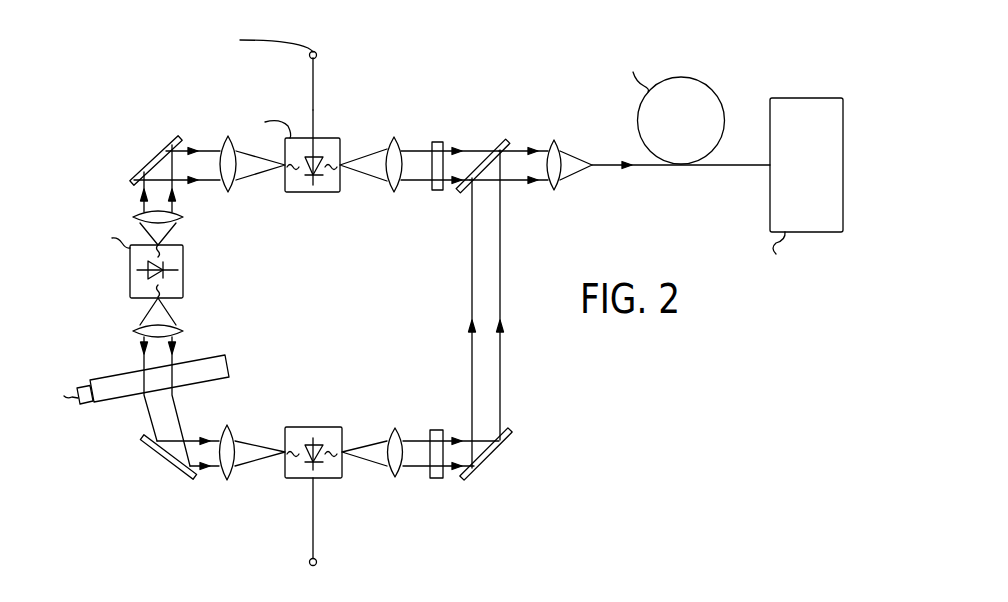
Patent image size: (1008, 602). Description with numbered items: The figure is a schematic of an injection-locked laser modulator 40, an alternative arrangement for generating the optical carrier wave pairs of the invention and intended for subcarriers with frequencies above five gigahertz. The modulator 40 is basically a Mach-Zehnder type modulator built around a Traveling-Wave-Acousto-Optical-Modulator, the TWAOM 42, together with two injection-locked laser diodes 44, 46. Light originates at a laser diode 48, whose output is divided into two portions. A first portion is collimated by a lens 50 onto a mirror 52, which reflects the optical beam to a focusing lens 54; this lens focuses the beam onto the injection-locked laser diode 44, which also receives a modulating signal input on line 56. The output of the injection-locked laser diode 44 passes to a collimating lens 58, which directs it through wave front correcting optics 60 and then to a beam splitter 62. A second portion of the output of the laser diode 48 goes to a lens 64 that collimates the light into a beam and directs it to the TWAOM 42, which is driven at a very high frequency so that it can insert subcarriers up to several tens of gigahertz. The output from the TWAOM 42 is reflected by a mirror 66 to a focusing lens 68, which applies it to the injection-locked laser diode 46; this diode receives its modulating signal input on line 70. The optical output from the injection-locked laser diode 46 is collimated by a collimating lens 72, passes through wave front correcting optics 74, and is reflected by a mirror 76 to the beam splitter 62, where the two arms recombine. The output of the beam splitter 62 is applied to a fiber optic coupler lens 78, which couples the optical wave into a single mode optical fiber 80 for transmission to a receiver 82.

The injection-locked laser modulator 40 is at (421, 102).
The Traveling-Wave-Acousto-Optical-Modulator (TWAOM) 42 is at (125, 396).
The injection-locked laser diode 44 is at (323, 138).
The injection-locked laser diode 46 is at (325, 478).
The laser diode 48 is at (130, 270).
The lens 50 is at (182, 216).
The mirror 52 is at (166, 147).
The focusing lens 54 is at (237, 147).
The line 56 is at (313, 106).
The collimating lens 58 is at (395, 183).
The wave front correcting optics 60 is at (437, 142).
The beam splitter 62 is at (503, 143).
The lens 64 is at (139, 323).
The mirror 66 is at (170, 461).
The focusing lens 68 is at (233, 434).
The line 70 is at (313, 513).
The collimating lens 72 is at (398, 431).
The wave front correcting optics 74 is at (435, 478).
The mirror 76 is at (508, 433).
The fiber optic coupler (lens) 78 is at (553, 183).
The single mode optical fiber 80 is at (713, 90).
The receiver 82 is at (843, 165).